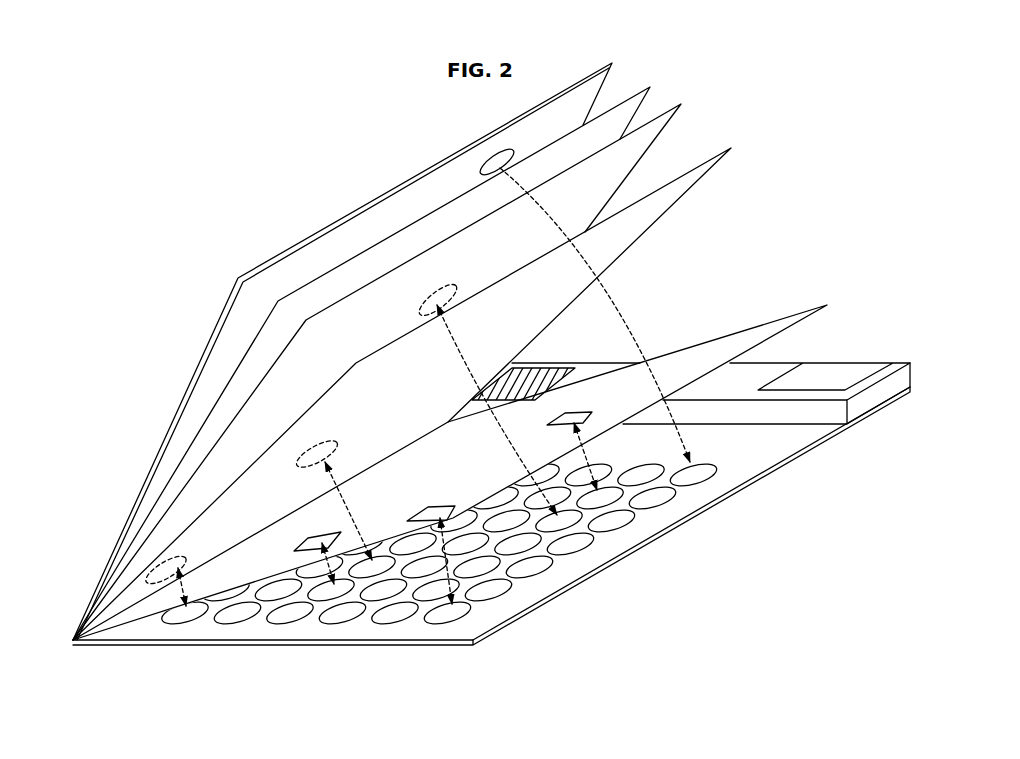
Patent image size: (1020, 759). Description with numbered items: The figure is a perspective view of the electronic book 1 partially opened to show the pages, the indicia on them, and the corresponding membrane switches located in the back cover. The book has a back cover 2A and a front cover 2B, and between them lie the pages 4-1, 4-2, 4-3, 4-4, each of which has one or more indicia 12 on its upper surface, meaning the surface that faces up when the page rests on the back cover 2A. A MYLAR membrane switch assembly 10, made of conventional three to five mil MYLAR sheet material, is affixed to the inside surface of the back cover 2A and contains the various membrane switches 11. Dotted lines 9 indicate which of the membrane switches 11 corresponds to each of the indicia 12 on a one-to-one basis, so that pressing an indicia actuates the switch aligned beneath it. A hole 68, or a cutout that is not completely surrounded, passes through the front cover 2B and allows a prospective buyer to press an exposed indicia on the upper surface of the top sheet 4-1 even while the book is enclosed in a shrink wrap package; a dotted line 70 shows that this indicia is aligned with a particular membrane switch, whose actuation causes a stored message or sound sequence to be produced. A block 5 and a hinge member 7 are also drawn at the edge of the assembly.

The device assembly 1 is at (150, 667).
The back cover 2A is at (700, 508).
The front cover 2B is at (594, 69).
The page 4-1 is at (651, 88).
The page 4-2 is at (681, 106).
The page 4-3 is at (707, 170).
The page 4-4 is at (773, 330).
The block 5 is at (853, 410).
The hinge member 7 is at (540, 376).
The dotted lines 9 is at (474, 340).
The MYLAR membrane switch assembly 10 is at (481, 614).
The membrane switches 11 is at (323, 600).
The indicia 12 is at (293, 551).
The hole 68 is at (516, 155).
The dotted line 70 is at (543, 213).